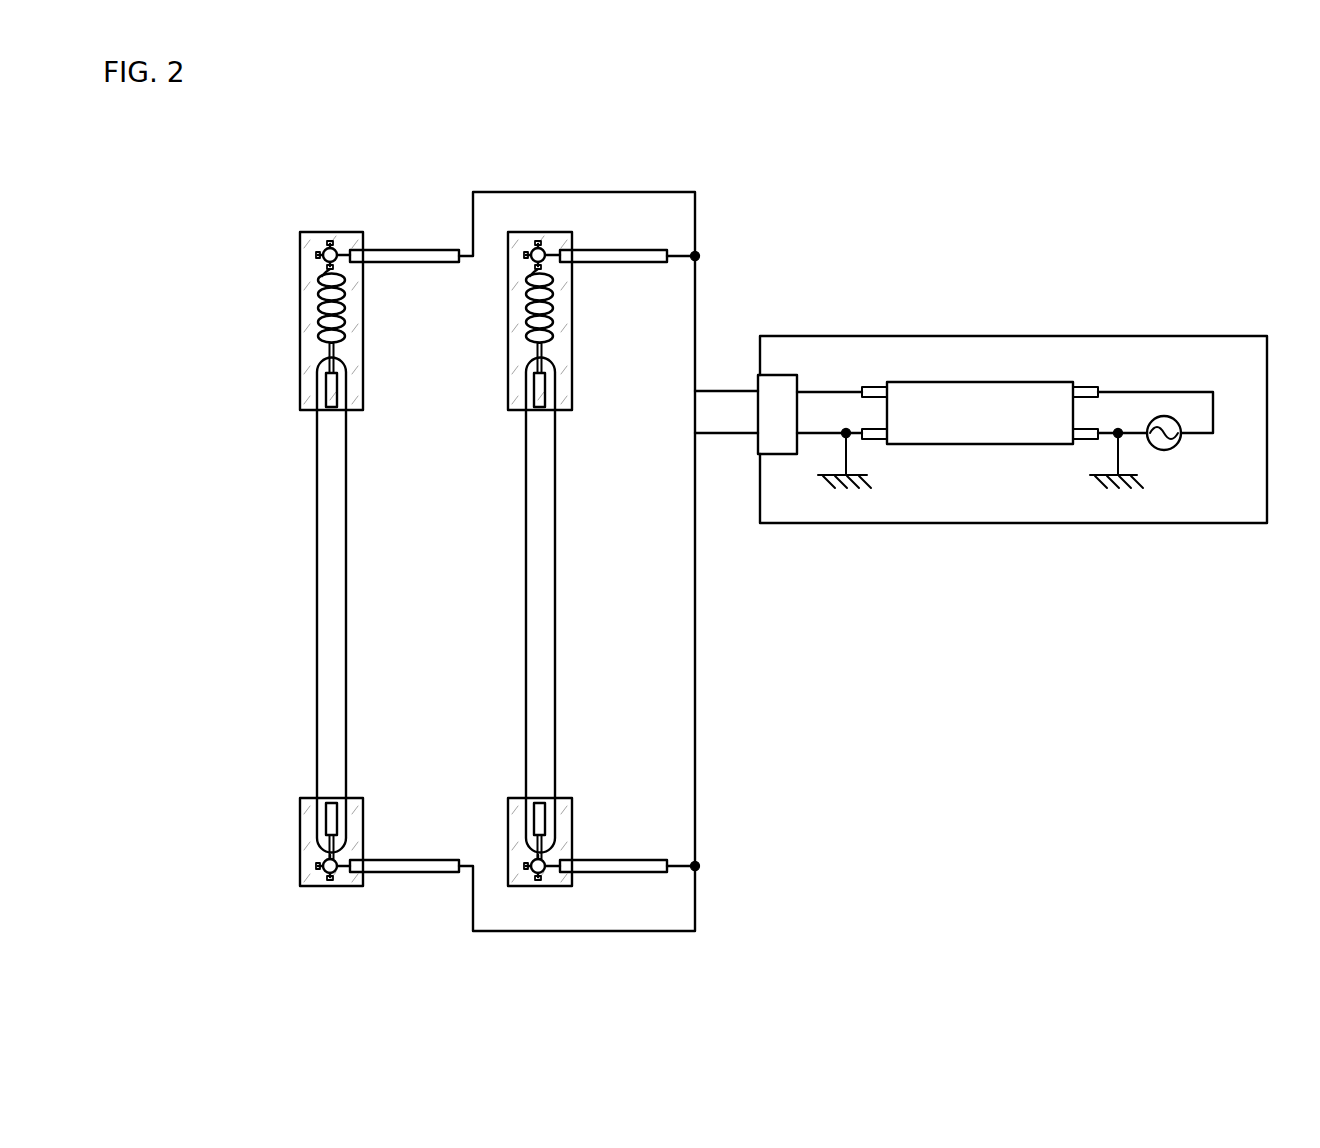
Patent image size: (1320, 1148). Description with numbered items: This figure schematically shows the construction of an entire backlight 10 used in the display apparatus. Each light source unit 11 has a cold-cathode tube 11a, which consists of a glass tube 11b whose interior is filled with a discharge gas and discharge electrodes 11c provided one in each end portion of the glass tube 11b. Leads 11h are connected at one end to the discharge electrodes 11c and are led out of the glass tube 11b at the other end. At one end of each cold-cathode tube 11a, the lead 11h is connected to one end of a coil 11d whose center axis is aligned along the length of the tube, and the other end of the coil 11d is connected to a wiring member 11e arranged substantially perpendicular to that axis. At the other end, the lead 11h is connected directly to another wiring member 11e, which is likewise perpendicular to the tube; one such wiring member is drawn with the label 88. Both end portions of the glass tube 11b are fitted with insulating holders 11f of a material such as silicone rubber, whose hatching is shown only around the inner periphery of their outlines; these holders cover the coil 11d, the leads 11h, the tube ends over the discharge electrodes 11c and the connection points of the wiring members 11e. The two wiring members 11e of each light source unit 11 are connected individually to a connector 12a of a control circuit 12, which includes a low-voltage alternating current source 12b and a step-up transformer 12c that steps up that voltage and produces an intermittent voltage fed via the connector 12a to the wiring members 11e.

The backlight 10 is at (776, 178).
The light source unit 11 is at (304, 664).
The cold-cathode tube 11a is at (315, 486).
The glass tube 11b is at (317, 600).
The discharge electrode 11c is at (328, 396).
The coil 11d is at (318, 304).
The wiring member 11e is at (409, 250).
The insulating holder 11f is at (312, 257).
The lead 11h is at (337, 348).
The lead terminal 88 is at (614, 250).
The control circuit 12 is at (1040, 336).
The connector 12a is at (757, 383).
The low-voltage alternating current source 12b is at (1180, 447).
The step-up transformer 12c is at (912, 382).